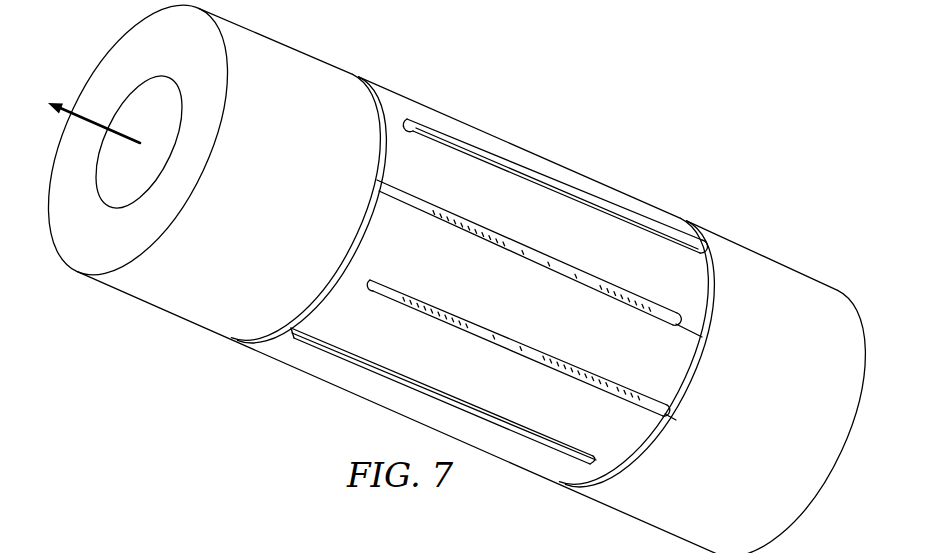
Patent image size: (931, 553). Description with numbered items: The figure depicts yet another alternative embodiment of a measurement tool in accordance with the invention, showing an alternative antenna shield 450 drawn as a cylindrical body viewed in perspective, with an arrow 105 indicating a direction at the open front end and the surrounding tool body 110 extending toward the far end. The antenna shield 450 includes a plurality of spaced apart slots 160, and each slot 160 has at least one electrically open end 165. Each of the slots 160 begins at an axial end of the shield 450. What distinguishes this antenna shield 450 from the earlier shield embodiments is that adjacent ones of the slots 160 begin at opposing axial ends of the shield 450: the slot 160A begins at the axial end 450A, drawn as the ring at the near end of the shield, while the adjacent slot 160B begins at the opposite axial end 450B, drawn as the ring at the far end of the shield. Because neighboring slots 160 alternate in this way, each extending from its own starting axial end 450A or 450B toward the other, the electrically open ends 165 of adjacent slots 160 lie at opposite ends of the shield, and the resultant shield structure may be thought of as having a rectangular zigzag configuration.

The distal end / insertion direction arrow 105 is at (92, 117).
The housing body 110 is at (772, 272).
The slots 160 is at (500, 163).
The slot 160A is at (398, 186).
The slot 160B is at (623, 393).
The electrically open end 165 is at (375, 189).
The antenna shield 450 is at (606, 174).
The axial end 450A is at (352, 248).
The axial end 450B is at (695, 362).